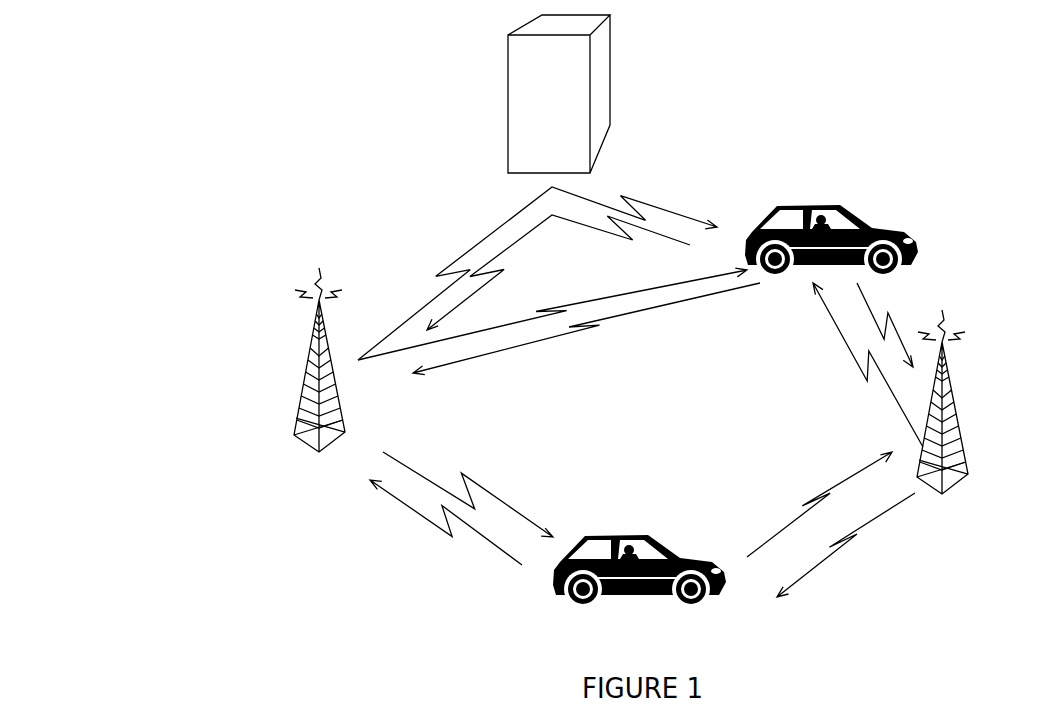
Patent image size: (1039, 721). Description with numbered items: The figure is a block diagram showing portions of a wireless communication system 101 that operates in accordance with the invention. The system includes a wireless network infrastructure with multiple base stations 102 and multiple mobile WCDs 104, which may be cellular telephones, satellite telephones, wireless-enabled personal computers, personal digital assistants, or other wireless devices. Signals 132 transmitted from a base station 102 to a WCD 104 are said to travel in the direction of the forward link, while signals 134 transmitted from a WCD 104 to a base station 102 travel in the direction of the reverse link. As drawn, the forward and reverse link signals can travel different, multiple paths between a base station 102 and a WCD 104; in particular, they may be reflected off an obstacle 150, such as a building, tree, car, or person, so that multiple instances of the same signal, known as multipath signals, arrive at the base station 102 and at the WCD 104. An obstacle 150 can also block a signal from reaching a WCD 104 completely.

The wireless communication system 101 is at (108, 159).
The base station 102 is at (303, 375).
The WCD 104 is at (910, 253).
The forward link signals 132 is at (503, 228).
The reverse link signals 134 is at (522, 238).
The obstacle 150 is at (507, 105).